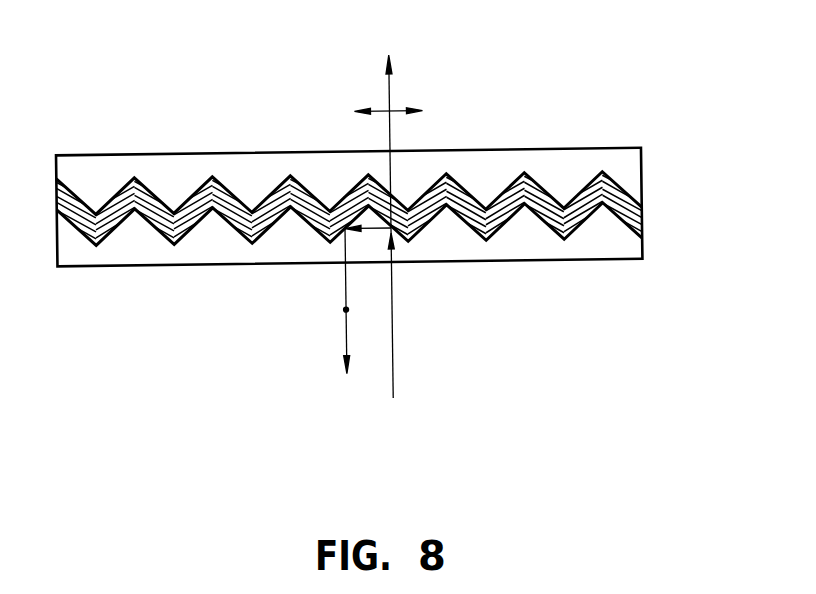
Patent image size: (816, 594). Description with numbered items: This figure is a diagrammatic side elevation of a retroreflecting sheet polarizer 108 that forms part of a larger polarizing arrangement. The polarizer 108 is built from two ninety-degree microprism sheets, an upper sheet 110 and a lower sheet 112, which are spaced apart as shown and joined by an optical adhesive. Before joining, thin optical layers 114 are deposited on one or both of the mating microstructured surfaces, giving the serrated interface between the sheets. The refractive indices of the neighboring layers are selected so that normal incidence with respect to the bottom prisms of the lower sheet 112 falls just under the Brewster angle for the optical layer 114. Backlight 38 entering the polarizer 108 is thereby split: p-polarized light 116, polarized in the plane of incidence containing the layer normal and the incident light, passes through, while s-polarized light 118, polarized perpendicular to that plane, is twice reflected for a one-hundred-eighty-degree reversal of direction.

The retroreflecting sheet polarizer 108 is at (349, 165).
The upper sheet 110 is at (348, 157).
The lower sheet 112 is at (350, 269).
The optical layers 114 is at (648, 220).
The p-polarized light 116 is at (423, 80).
The s-polarized light 118 is at (336, 330).
The backlight 38 is at (439, 226).